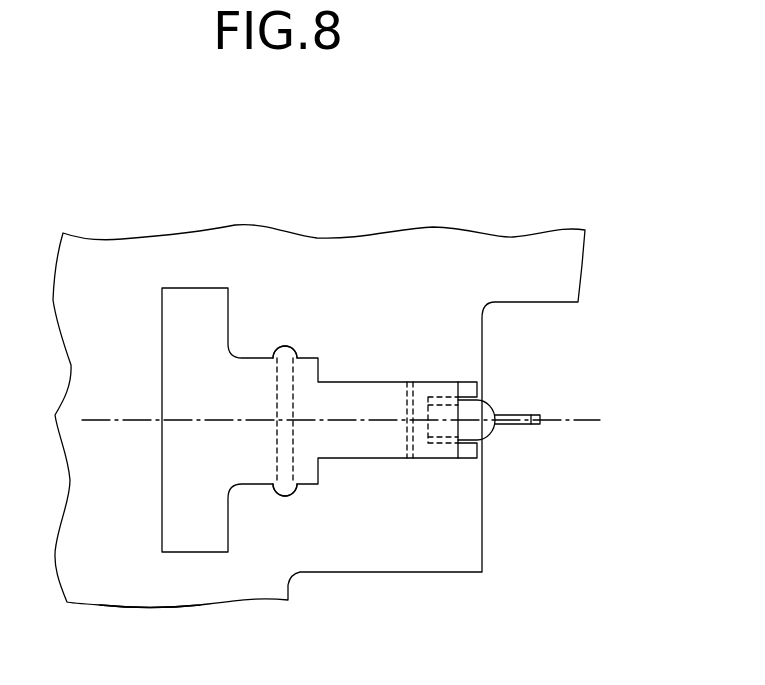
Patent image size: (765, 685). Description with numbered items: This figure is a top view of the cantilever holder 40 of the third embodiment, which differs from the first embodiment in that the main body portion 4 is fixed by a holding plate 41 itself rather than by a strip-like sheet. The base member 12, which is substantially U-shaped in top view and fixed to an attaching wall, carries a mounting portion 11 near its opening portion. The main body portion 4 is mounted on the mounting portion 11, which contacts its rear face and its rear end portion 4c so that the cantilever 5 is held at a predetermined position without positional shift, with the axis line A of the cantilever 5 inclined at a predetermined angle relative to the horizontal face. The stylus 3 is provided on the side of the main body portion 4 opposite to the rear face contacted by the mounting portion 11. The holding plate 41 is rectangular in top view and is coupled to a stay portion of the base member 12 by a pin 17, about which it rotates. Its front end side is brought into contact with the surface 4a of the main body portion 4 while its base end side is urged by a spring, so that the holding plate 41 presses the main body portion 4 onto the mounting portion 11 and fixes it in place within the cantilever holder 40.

The cantilever holder 40 is at (610, 240).
The holding plate 41 is at (208, 553).
The pin 17 is at (284, 496).
The mounting portion 11 is at (420, 458).
The rear end portion 4c is at (414, 400).
The surface 4a is at (473, 458).
The main body portion 4 is at (492, 432).
The cantilever 5 is at (522, 414).
The stylus 3 is at (537, 414).
The axis line A is at (597, 412).
The base member 12 is at (144, 596).